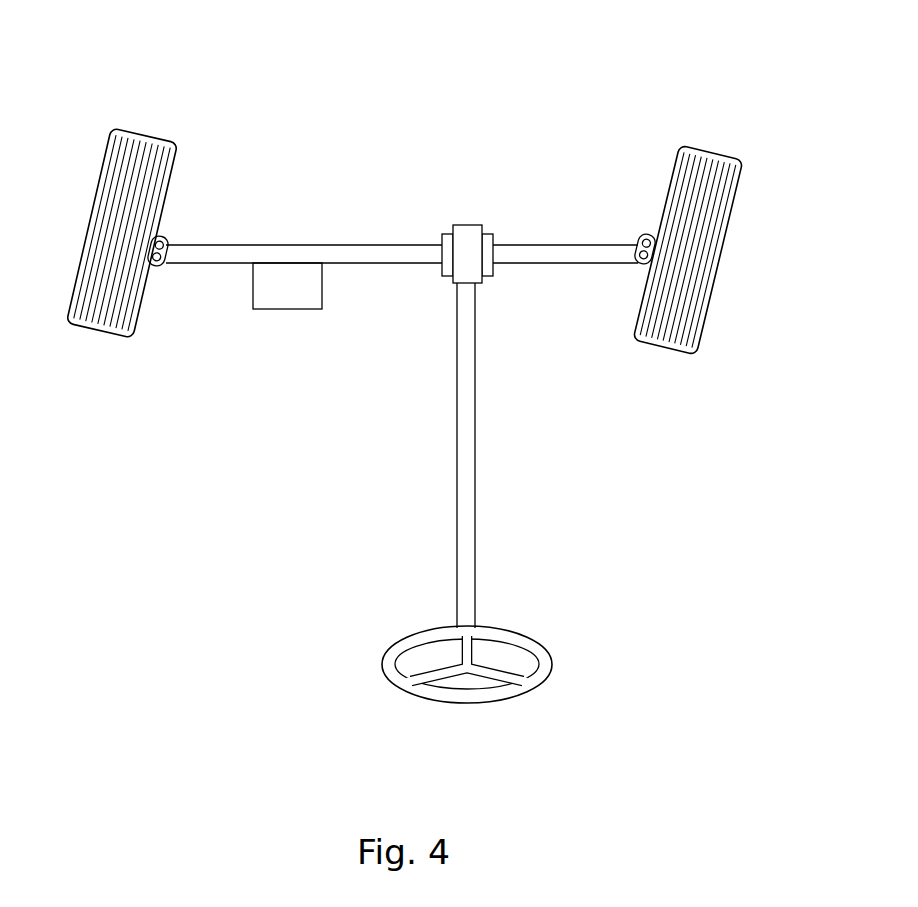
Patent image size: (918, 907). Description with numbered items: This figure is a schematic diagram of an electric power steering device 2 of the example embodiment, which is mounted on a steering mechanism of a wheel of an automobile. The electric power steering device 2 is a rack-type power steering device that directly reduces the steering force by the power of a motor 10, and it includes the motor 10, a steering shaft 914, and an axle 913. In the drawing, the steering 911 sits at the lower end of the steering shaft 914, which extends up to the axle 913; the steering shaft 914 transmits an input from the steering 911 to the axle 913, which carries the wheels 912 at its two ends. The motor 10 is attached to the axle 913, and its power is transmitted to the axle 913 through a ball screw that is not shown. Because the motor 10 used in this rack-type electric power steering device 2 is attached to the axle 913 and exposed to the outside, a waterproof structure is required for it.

The electric power steering device 2 is at (604, 130).
The motor 10 is at (288, 312).
The steering 911 is at (455, 696).
The wheels 912 is at (104, 312).
The axle 913 is at (523, 253).
The steering shaft 914 is at (467, 563).